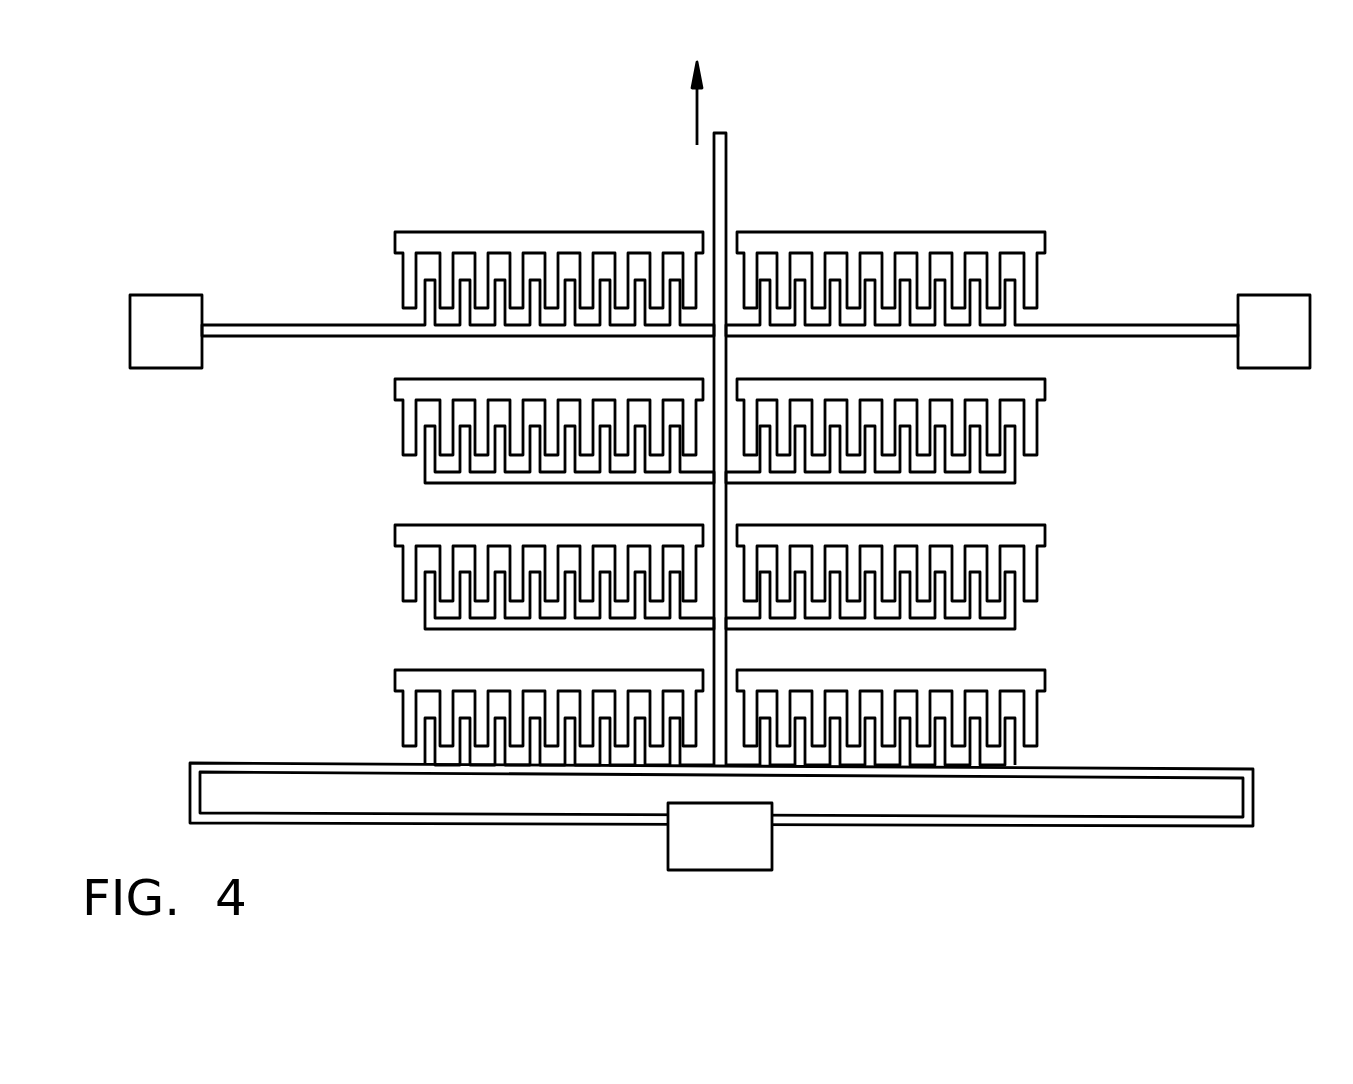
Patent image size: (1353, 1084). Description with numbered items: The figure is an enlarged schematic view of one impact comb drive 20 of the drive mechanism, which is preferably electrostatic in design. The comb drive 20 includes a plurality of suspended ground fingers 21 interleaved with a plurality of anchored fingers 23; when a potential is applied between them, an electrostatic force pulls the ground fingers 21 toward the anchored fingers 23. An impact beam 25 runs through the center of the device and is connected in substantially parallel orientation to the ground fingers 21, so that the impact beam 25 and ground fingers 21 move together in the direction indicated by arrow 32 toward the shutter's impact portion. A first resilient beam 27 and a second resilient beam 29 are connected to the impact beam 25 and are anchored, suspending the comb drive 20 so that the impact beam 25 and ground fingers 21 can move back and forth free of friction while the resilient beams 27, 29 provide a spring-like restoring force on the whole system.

The impact comb drive 20 is at (1016, 128).
The suspended ground fingers 21 is at (1020, 318).
The anchored fingers 23 is at (1031, 233).
The impact beam 25 is at (727, 190).
The first resilient beam 27 is at (1150, 327).
The second resilient beam 29 is at (1128, 767).
The arrow 32 is at (694, 114).